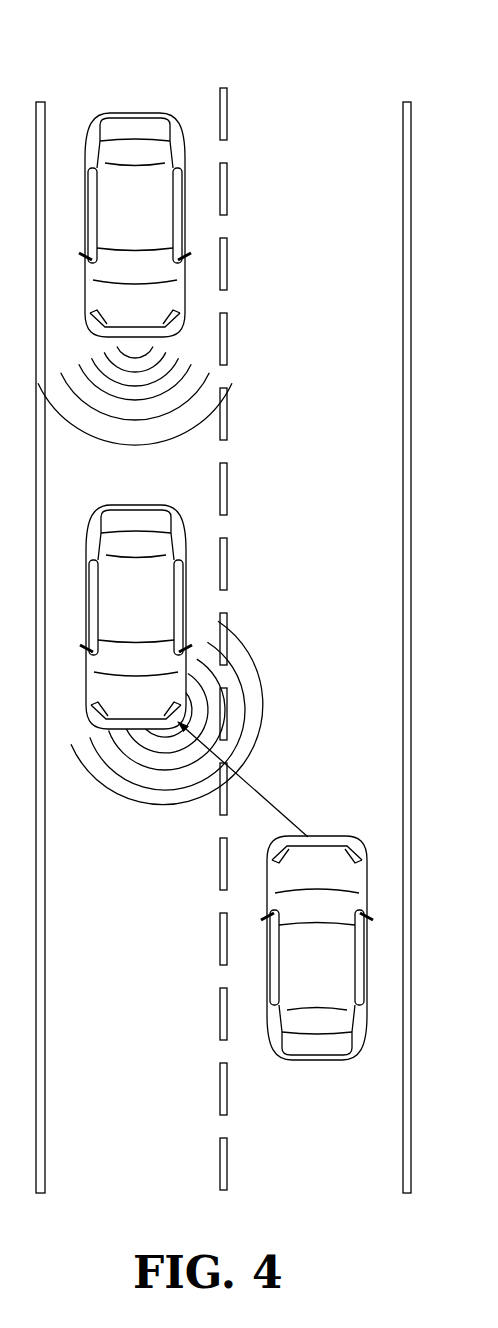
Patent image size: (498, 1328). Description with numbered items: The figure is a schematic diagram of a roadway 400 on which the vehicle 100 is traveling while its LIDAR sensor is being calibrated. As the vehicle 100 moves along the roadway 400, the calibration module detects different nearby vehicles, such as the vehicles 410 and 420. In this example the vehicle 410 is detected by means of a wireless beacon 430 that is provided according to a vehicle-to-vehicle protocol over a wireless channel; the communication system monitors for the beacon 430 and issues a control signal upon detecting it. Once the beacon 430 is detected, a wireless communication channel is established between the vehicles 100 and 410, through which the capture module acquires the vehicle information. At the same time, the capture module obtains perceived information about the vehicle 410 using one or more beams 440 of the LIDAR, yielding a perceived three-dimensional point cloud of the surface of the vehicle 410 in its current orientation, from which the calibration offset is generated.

The roadway 400 is at (343, 83).
The vehicle 420 is at (154, 219).
The vehicle 410 is at (154, 612).
The wireless beacon 430 is at (253, 652).
The beams 440 is at (258, 790).
The vehicle 100 is at (336, 984).